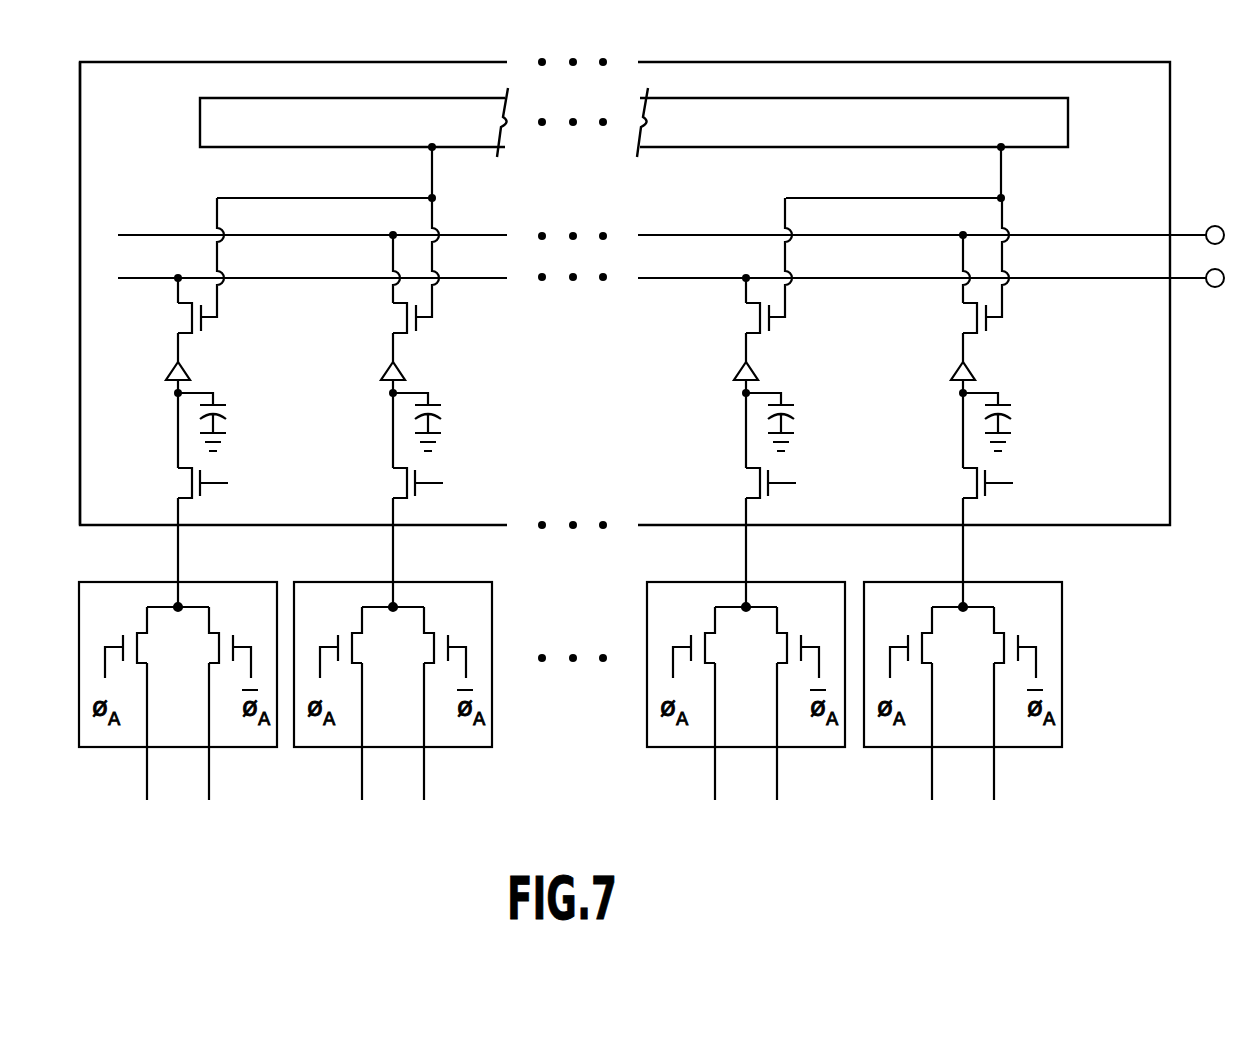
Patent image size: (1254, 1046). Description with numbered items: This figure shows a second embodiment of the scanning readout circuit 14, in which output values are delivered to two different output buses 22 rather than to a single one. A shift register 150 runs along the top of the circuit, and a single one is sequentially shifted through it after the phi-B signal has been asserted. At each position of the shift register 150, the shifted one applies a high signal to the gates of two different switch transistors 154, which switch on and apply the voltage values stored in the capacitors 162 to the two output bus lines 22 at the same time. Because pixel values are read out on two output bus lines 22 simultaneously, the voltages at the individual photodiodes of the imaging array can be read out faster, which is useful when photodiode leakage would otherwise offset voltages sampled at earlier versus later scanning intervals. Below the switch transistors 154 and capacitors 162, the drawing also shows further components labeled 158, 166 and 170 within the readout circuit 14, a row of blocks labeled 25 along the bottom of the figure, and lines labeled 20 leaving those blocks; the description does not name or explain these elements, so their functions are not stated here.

The scanning readout circuit 14 is at (1170, 148).
The output lines 20 is at (578, 758).
The output bus lines 22 is at (683, 259).
The multiplexer blocks 25 is at (1132, 740).
The shift register 150 is at (1068, 118).
The switch transistors 154 is at (1030, 316).
The buffers 158 is at (1008, 367).
The capacitors 162 is at (1043, 410).
The transfer transistors 166 is at (985, 484).
The output nodes 170 is at (1003, 613).